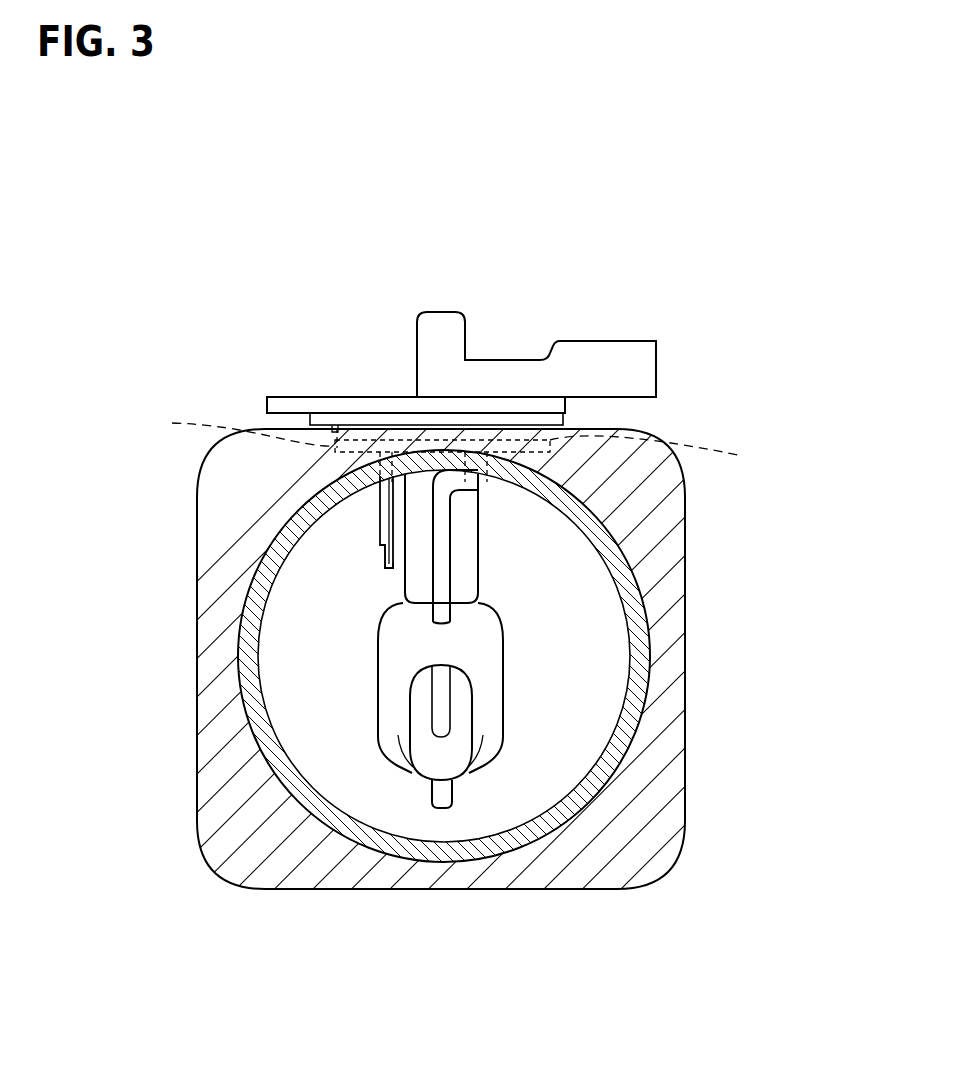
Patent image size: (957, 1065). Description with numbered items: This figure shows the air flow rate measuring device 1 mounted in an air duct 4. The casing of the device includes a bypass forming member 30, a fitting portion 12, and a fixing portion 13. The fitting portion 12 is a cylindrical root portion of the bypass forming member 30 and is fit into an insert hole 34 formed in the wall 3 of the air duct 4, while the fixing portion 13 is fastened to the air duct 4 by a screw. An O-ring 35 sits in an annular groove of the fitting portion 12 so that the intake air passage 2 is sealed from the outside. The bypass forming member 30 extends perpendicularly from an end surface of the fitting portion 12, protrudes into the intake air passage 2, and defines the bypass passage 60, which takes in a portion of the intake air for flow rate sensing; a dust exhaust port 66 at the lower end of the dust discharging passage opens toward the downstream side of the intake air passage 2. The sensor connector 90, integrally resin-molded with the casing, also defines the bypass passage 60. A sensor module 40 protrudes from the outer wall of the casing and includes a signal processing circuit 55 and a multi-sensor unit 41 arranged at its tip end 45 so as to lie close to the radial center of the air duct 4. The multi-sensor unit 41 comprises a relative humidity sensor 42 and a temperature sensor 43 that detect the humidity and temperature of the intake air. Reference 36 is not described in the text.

The air flow rate measuring device 1 is at (244, 319).
The intake air passage 2 is at (573, 718).
The wall 3 is at (197, 735).
The air duct 4 is at (240, 492).
The fitting portion 12 is at (237, 426).
The fixing portion 13 is at (388, 398).
The bypass forming member 30 is at (465, 553).
The insert hole 34 is at (510, 423).
The O-ring 35 is at (554, 455).
The inner passage 36 is at (403, 585).
The sensor module 40 is at (385, 497).
The multi-sensor unit 41 is at (110, 543).
The relative humidity sensor 42 is at (385, 556).
The temperature sensor 43 is at (383, 565).
The tip end 45 is at (387, 568).
The signal processing circuit 55 is at (385, 518).
The bypass passage 60 is at (440, 752).
The dust exhaust port 66 is at (437, 697).
The sensor connector 90 is at (608, 371).